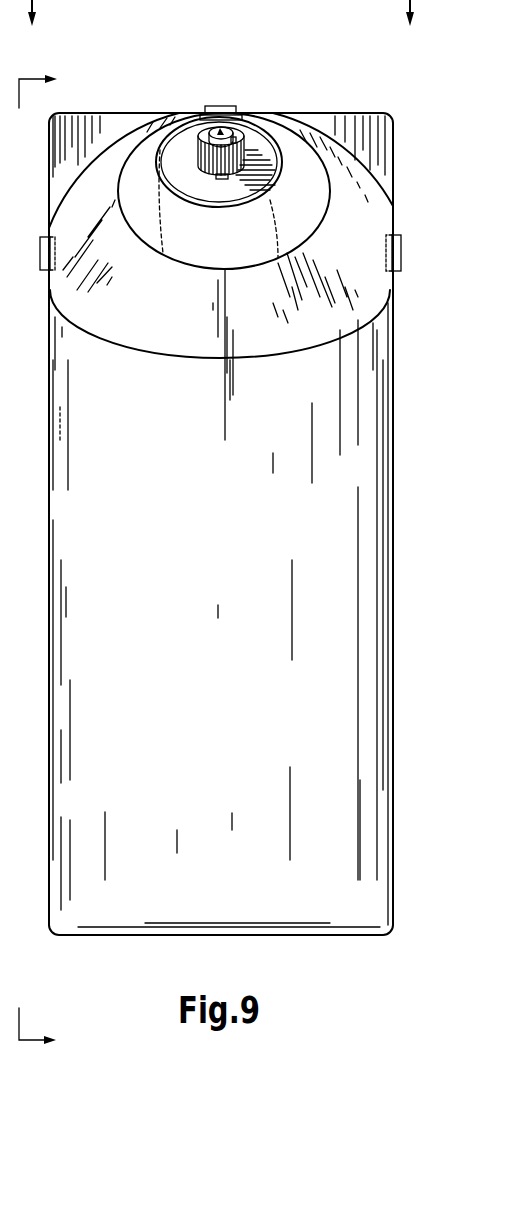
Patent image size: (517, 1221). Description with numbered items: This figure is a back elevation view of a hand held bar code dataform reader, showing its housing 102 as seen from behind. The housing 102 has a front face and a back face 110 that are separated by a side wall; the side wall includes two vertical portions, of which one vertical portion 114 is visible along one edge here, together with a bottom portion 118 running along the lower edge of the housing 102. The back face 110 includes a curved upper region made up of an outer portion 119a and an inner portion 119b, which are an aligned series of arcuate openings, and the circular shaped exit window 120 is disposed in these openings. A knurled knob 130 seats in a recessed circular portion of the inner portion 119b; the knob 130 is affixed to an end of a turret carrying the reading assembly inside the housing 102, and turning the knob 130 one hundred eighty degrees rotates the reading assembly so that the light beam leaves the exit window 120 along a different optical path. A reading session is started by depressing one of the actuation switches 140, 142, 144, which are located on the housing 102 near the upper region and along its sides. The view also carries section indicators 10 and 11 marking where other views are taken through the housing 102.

The section line 10- 10 is at (228, 29).
The section line 11- 11 is at (52, 560).
The housing 102 is at (406, 614).
The back face 110 is at (210, 584).
The vertical portion of side wall 114 is at (392, 425).
The bottom portion of side wall 118 is at (127, 935).
The outer portion of upper region 119a is at (173, 311).
The inner portion of upper region 119b is at (140, 157).
The exit window 120 is at (238, 245).
The knurled knob 130 is at (240, 138).
The actuation switch 140 is at (221, 106).
The actuation switch 142 is at (40, 248).
The actuation switch 144 is at (401, 245).